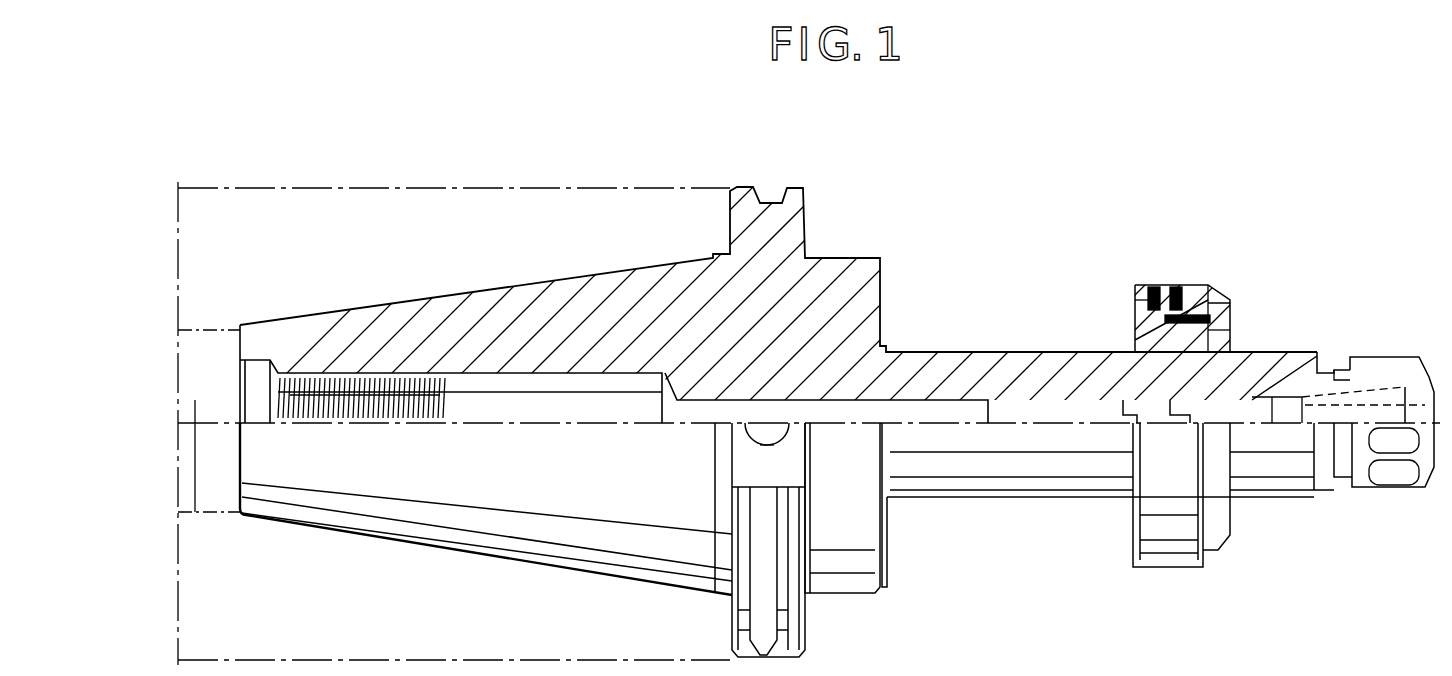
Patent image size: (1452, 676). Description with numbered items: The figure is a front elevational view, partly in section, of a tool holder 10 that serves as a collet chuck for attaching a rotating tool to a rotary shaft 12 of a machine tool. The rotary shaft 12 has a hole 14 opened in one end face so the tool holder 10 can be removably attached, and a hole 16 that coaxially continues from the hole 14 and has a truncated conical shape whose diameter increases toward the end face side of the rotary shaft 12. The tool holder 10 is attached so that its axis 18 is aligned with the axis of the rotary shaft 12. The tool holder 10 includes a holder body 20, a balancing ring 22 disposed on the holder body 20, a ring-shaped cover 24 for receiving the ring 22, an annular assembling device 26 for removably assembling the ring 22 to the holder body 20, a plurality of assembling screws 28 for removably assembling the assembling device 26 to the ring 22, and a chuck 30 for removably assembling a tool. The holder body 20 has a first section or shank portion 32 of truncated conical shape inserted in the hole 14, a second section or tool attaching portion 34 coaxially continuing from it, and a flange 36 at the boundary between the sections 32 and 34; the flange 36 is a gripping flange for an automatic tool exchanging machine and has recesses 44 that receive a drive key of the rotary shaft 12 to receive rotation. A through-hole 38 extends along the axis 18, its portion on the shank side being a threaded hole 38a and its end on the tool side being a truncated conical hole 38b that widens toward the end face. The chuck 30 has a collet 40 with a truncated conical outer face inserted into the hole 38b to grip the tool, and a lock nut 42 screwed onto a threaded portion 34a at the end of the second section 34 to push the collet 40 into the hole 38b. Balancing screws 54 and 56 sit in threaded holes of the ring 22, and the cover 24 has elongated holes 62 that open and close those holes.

The tool holder 10 is at (1023, 194).
The rotary shaft 12 is at (391, 185).
The hole 14 is at (407, 545).
The hole 16 is at (192, 528).
The axis 18 is at (558, 425).
The holder body 20 is at (850, 258).
The balancing ring 22 is at (1121, 349).
The ring-shaped cover 24 is at (1130, 280).
The annular assembling device 26 is at (1234, 290).
The assembling screws 28 is at (1235, 300).
The chuck 30 is at (1400, 498).
The first section (shank portion) 32 is at (580, 279).
The second section (tool attaching portion) 34 is at (1010, 352).
The threaded portion 34a is at (1336, 372).
The flange 36 is at (790, 190).
The through-hole 38 is at (490, 378).
The threaded hole 38a is at (352, 380).
The truncated conical hole 38b is at (1305, 396).
The collet 40 is at (1374, 415).
The lock nut 42 is at (1402, 360).
The recesses 44 is at (737, 470).
The balancing member (screw) 54 is at (1150, 290).
The balancing member (screw) 56 is at (1178, 292).
The holes 62 is at (1195, 300).